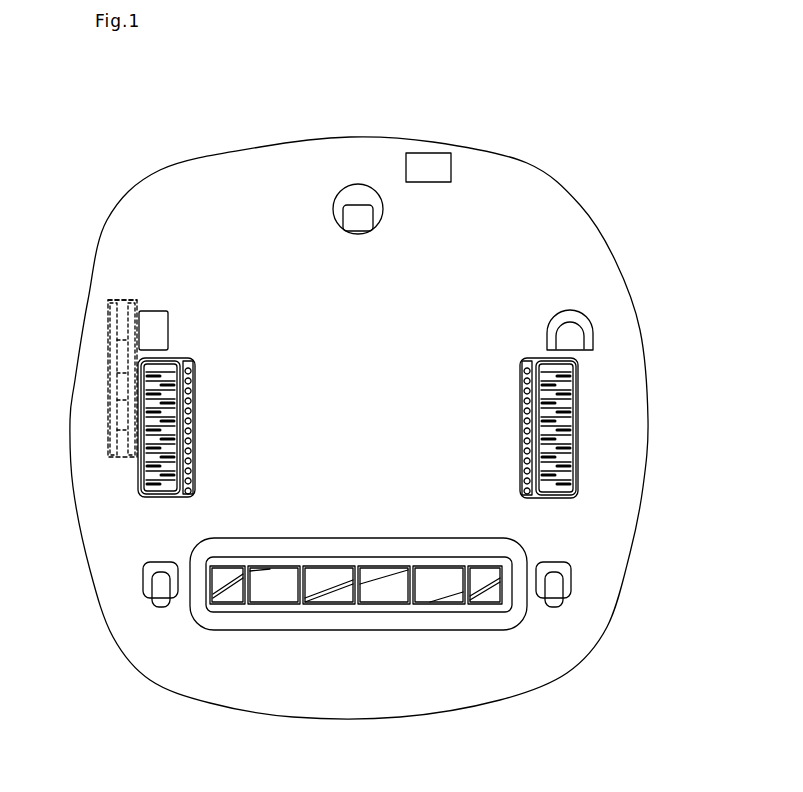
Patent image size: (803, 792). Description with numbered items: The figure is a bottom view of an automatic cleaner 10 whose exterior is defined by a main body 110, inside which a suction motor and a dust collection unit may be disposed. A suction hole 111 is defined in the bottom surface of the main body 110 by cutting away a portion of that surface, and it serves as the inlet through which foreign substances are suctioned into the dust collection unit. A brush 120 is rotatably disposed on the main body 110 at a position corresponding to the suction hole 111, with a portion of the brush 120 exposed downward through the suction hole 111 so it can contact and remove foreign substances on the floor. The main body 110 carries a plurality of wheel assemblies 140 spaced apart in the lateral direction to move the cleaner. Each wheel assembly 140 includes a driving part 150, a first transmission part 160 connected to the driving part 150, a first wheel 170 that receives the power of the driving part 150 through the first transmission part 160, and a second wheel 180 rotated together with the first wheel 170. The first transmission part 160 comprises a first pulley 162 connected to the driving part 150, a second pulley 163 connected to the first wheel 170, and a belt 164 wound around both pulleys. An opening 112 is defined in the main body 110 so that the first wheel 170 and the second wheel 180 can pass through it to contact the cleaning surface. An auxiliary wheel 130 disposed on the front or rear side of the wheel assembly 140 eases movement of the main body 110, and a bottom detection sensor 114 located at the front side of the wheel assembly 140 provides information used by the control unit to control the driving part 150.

The automatic cleaner 10 is at (527, 116).
The main body 110 is at (288, 157).
The suction hole 111 is at (266, 584).
The opening 112 is at (158, 300).
The bottom detection sensor 114 is at (428, 153).
The brush 120 is at (358, 649).
The auxiliary wheel 130 is at (358, 184).
The wheel assembly 140 is at (586, 431).
The driving part 150 is at (170, 330).
The first transmission part 160 is at (78, 378).
The first pulley 162 is at (108, 321).
The second pulley 163 is at (106, 435).
The belt 164 is at (106, 387).
The first wheel 170 is at (140, 473).
The second wheel 180 is at (195, 478).